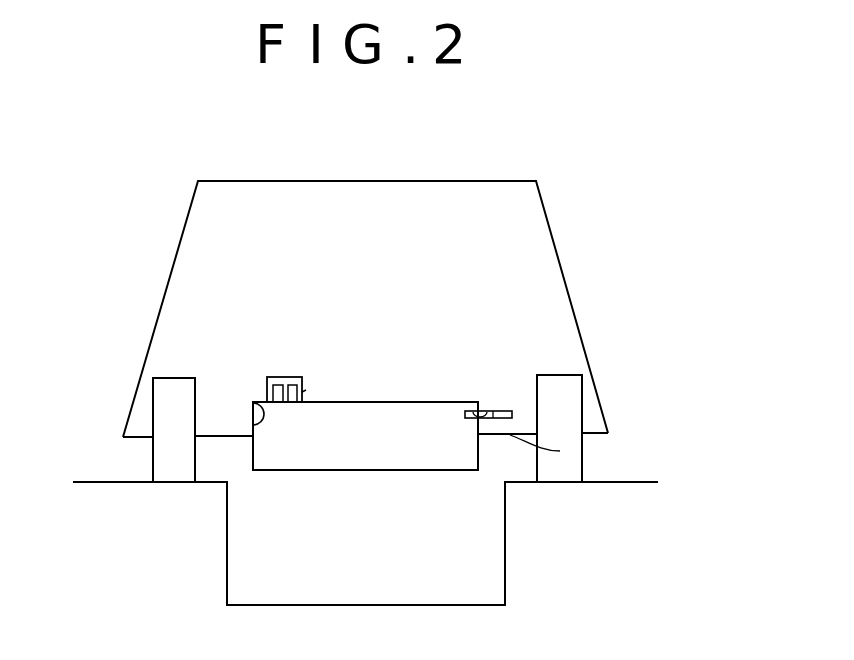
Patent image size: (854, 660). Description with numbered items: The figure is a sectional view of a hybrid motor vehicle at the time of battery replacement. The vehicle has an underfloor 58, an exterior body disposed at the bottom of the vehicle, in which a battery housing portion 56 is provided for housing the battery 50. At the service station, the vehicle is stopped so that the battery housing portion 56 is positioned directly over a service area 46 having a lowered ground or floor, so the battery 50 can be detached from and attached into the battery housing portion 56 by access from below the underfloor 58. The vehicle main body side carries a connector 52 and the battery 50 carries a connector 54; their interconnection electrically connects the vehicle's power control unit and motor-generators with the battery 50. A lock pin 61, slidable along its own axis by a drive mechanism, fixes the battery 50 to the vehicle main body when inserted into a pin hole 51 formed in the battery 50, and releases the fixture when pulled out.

The service area 46 is at (505, 520).
The battery 50 is at (397, 422).
The pin hole 51 is at (483, 410).
The connector 52 is at (283, 377).
The connector 54 is at (302, 392).
The battery housing portion 56 is at (263, 402).
The underfloor 58 is at (560, 451).
The lock pin 61 is at (492, 418).